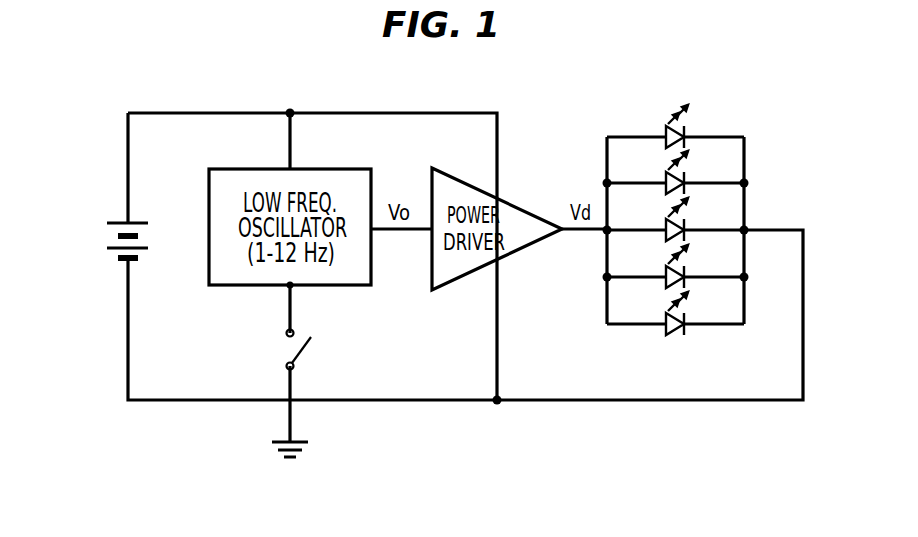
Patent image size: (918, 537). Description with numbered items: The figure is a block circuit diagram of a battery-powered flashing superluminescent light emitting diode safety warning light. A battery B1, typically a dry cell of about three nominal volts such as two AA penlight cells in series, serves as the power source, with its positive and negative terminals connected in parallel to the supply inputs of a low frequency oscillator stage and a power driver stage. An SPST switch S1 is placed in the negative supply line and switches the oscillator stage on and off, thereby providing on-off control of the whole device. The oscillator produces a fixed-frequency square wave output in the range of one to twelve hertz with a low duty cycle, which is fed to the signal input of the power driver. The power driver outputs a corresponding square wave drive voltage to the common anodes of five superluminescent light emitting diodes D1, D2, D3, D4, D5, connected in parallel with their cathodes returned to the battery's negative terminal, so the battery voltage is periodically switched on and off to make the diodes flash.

The battery B1 is at (112, 240).
The SPST switch S1 is at (283, 350).
The superluminescent light emitting diode D1 is at (675, 125).
The superluminescent light emitting diode D2 is at (675, 171).
The superluminescent light emitting diode D3 is at (675, 218).
The superluminescent light emitting diode D4 is at (675, 265).
The superluminescent light emitting diode D5 is at (675, 312).